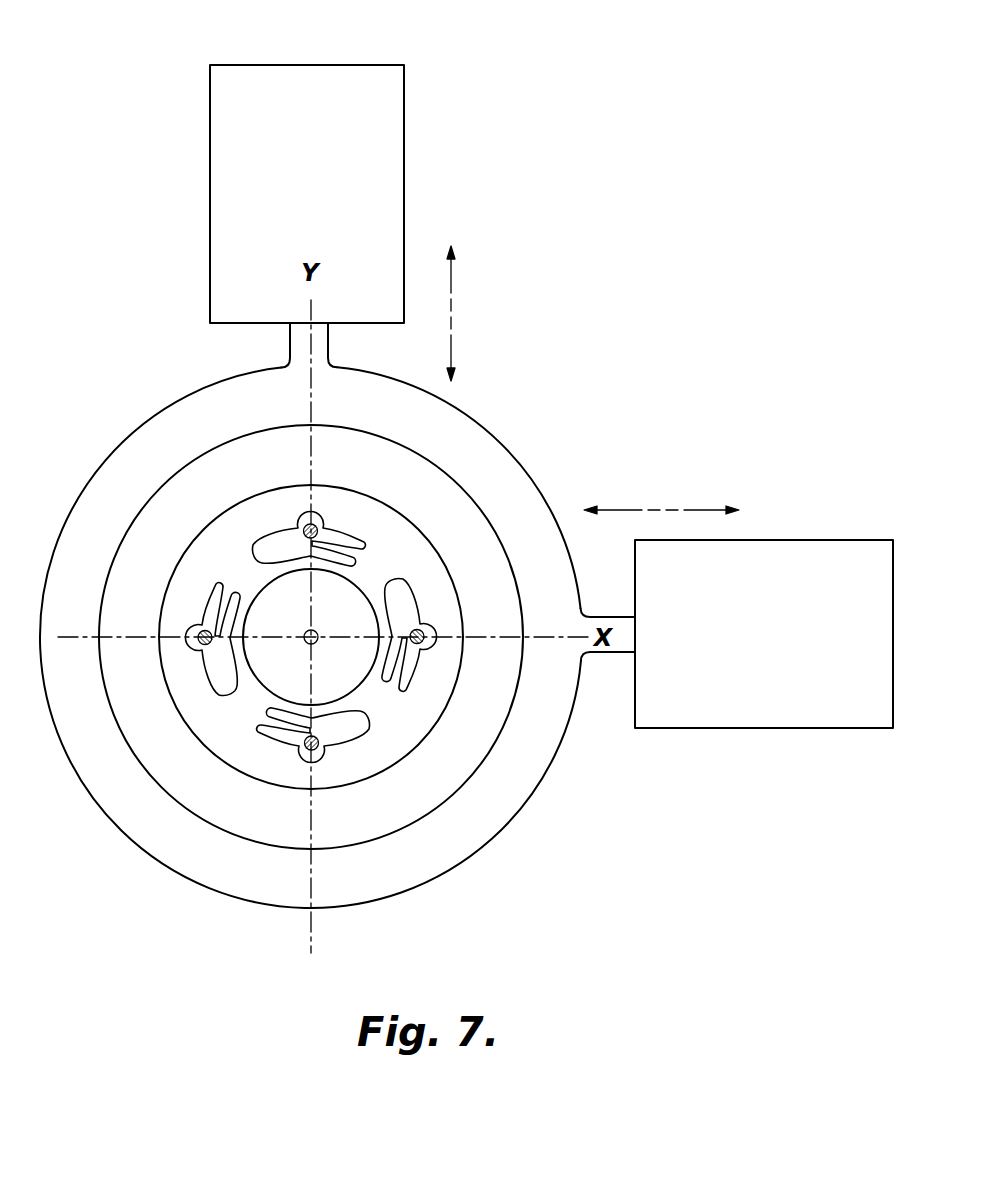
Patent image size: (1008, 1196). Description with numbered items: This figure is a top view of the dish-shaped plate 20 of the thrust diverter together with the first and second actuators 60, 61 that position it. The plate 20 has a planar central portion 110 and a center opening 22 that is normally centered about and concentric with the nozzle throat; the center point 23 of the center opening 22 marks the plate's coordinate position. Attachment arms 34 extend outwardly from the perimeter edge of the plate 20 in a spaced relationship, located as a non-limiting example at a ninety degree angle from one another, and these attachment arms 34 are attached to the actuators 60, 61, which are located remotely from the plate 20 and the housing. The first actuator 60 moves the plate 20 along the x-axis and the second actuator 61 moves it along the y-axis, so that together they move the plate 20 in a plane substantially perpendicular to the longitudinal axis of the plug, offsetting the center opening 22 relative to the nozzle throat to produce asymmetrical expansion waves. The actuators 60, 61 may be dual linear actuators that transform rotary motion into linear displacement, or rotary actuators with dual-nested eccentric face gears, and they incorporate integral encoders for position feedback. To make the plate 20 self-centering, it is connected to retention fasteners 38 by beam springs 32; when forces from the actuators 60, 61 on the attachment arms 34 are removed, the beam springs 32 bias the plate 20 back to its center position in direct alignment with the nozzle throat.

The second actuator 61 is at (290, 75).
The first actuator 60 is at (860, 553).
The attachment arms 34 is at (298, 340).
The plate 20 is at (485, 462).
The planar central portion 110 is at (193, 577).
The center opening 22 is at (275, 610).
The center point 23 is at (318, 632).
The beam springs 32 is at (408, 663).
The retention fasteners 38 is at (425, 640).